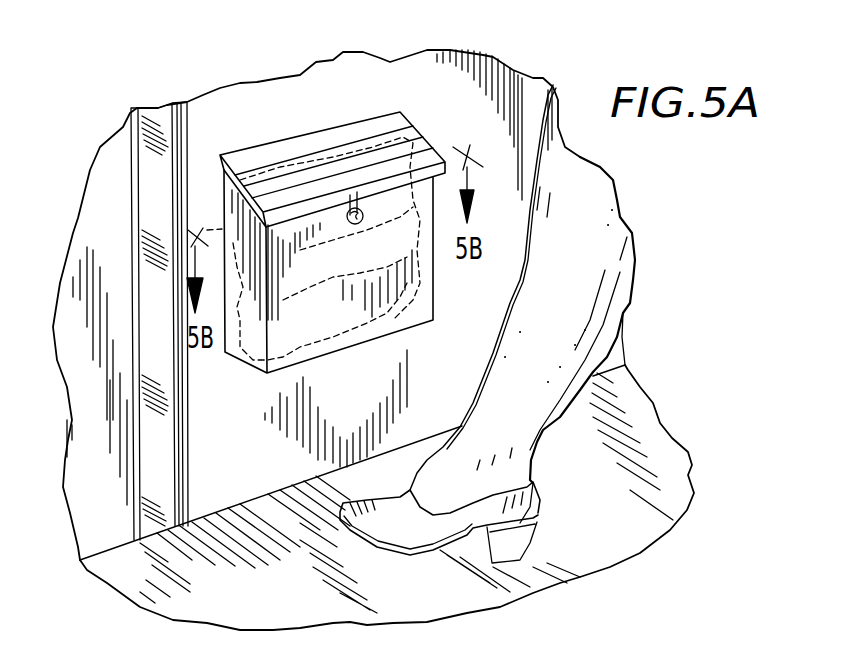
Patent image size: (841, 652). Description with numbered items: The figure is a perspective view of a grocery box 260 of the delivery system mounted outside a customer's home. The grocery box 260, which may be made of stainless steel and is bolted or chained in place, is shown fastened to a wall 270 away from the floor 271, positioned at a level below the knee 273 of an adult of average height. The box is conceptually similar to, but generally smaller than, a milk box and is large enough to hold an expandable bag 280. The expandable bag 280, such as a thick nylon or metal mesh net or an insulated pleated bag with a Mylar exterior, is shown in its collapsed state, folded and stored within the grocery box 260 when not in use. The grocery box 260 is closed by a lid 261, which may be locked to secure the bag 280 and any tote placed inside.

The wall 270 is at (343, 88).
The floor 271 is at (258, 543).
The knee 273 is at (557, 210).
The grocery box 260 is at (356, 203).
The lid 261 is at (407, 117).
The expandable bag 280 is at (422, 333).